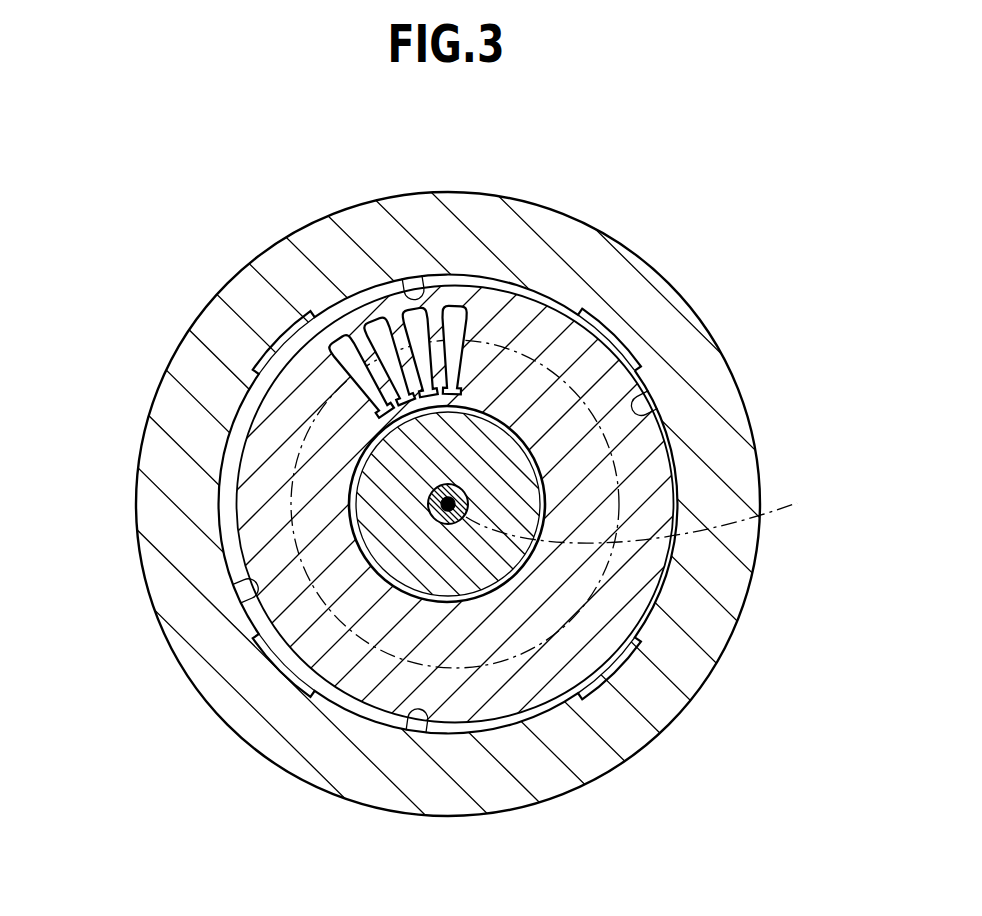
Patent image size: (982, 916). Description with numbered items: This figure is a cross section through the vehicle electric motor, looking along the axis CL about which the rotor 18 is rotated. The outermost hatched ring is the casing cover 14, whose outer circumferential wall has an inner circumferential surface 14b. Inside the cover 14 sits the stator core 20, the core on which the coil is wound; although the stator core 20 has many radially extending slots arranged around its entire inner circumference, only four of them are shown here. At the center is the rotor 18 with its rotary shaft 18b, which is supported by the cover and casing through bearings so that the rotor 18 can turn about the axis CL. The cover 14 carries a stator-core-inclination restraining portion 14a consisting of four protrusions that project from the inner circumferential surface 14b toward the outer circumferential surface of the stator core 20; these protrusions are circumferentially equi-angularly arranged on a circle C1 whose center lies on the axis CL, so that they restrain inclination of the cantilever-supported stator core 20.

The casing cover 14 is at (365, 228).
The stator-core-inclination restraining portion 14a is at (420, 288).
The inner circumferential surface 14b is at (627, 353).
The stator core 20 is at (542, 327).
The rotor 18 is at (397, 455).
The rotary shaft 18b is at (430, 497).
The circle C1 is at (293, 313).
The axis CL is at (647, 515).